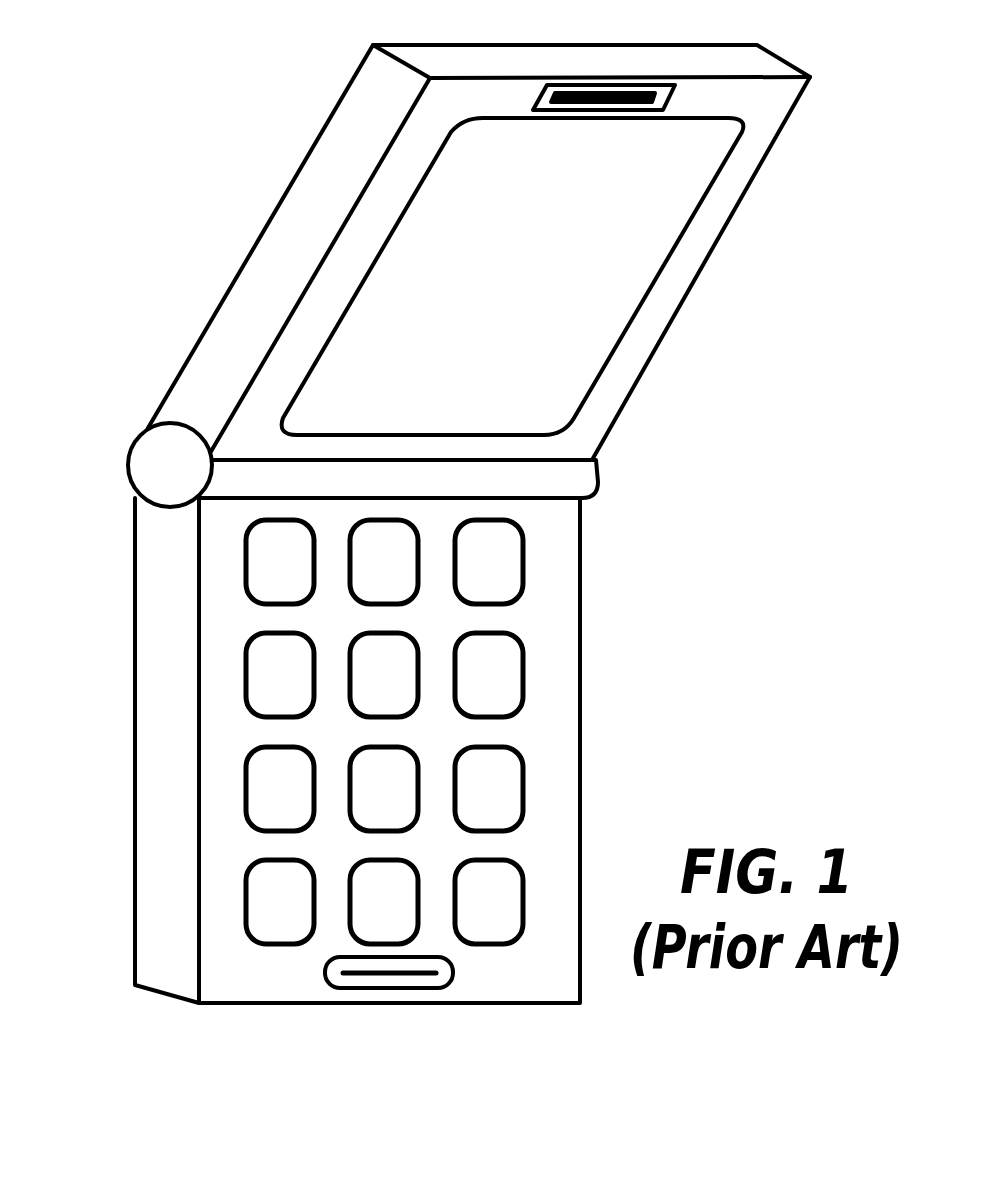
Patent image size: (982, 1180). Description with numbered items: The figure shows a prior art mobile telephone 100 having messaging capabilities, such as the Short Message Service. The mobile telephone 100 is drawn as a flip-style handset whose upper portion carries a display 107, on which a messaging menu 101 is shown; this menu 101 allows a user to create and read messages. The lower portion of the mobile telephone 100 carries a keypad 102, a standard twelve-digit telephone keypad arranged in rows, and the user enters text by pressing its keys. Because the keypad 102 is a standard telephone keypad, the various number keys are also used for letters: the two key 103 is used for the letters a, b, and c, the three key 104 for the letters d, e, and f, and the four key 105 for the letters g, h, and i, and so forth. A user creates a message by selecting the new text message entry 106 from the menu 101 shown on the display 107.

The mobile telephone 100 is at (716, 523).
The messaging menu 101 is at (642, 240).
The keypad 102 is at (535, 647).
The 2-key 103 is at (388, 532).
The 3-key 104 is at (517, 600).
The 4-key 105 is at (257, 678).
The new text message entry 106 is at (455, 168).
The display 107 is at (410, 183).